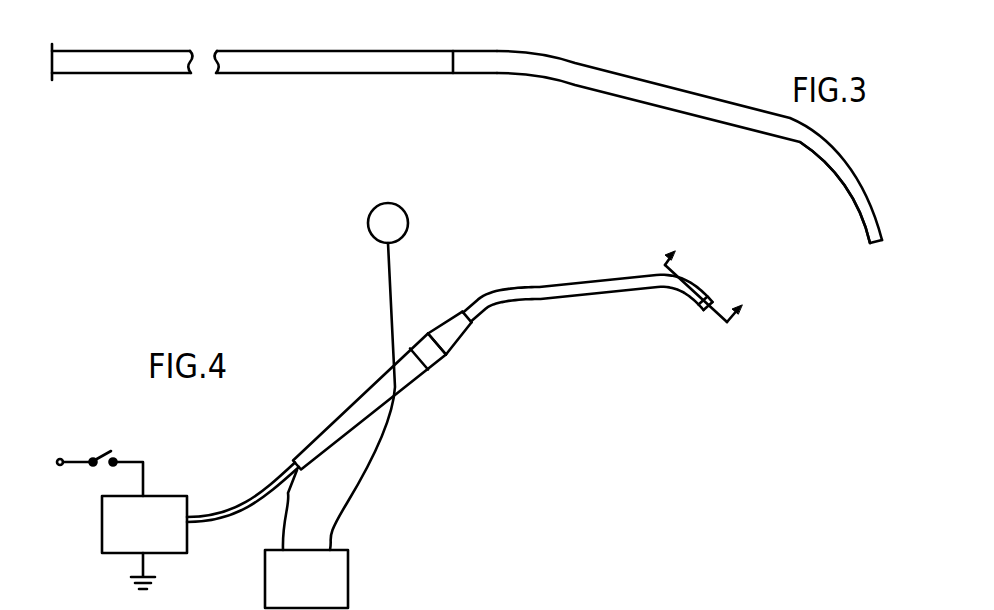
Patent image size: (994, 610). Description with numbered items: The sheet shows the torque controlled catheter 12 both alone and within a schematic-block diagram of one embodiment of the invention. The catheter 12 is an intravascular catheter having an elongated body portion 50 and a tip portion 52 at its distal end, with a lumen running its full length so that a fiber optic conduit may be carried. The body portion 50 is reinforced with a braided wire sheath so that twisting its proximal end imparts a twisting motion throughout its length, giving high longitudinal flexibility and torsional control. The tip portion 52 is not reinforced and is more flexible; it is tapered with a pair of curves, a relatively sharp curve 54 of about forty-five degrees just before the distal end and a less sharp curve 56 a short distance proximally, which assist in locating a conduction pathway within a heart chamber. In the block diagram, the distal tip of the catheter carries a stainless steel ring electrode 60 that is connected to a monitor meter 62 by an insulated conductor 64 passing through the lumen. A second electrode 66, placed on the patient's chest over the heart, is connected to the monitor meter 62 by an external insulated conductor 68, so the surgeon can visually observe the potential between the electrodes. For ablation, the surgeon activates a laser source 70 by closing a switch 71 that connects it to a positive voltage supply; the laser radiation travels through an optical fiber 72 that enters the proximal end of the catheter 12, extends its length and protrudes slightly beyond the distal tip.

In FIG. 3, the catheter 12 is at (507, 117).
In FIG. 4, the catheter 12 is at (358, 371).
In FIG. 3, the elongated body portion 50 is at (288, 73).
In FIG. 4, the elongated body portion 50 is at (350, 412).
In FIG. 3, the tip portion 52 is at (685, 113).
In FIG. 4, the tip portion 52 is at (578, 298).
In FIG. 3, the curve 54 is at (810, 157).
In FIG. 3, the less sharp curve 56 is at (555, 77).
In FIG. 4, the ring electrode 60 is at (699, 307).
In FIG. 4, the monitor meter 62 is at (343, 590).
In FIG. 4, the insulated conductor 64 is at (291, 503).
In FIG. 4, the second electrode 66 is at (368, 223).
In FIG. 4, the external insulated conductor 68 is at (350, 501).
In FIG. 4, the laser source 70 is at (102, 515).
In FIG. 4, the switch 71 is at (106, 432).
In FIG. 4, the optical fiber 72 is at (228, 506).